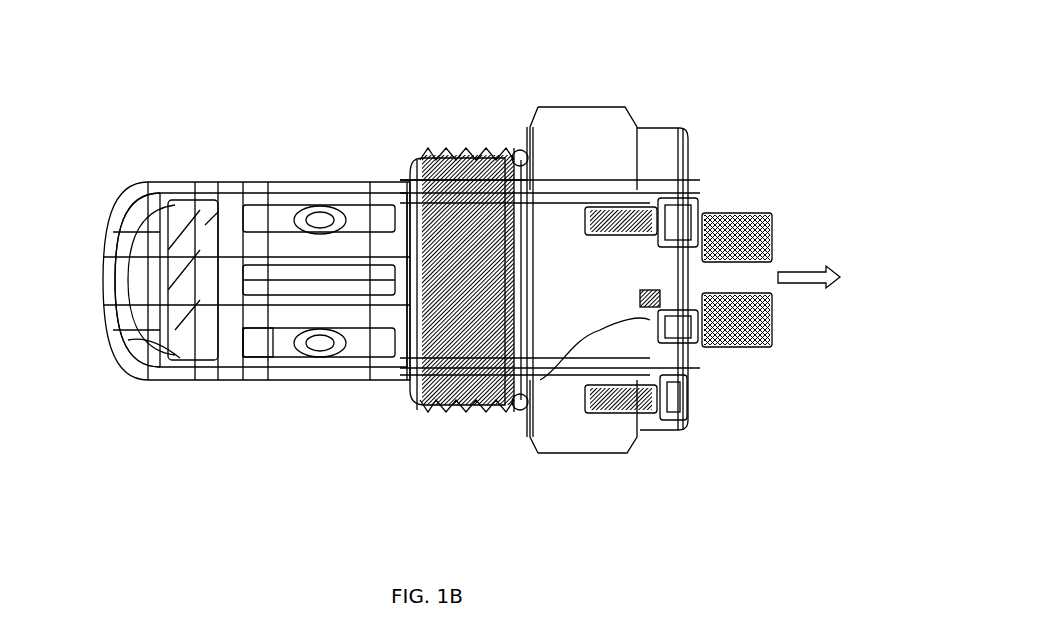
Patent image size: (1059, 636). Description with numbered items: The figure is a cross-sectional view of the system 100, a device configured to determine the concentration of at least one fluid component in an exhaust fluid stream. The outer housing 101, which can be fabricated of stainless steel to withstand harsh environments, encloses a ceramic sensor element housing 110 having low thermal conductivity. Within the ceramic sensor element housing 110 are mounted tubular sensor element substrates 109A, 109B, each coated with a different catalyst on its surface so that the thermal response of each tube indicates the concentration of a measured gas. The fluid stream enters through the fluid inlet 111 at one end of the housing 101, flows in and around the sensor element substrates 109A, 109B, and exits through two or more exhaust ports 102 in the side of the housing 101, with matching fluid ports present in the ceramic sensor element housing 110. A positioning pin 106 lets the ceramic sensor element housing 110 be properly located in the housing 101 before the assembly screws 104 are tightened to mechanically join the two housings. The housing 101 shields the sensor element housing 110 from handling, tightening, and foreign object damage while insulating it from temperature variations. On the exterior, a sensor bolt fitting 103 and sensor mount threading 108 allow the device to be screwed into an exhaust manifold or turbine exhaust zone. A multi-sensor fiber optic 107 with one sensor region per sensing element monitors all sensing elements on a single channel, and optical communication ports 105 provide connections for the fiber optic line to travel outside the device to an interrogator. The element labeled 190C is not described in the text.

The system 100 is at (636, 78).
The housing 101 is at (136, 190).
The exhaust ports 102 is at (302, 196).
The sensor bolt fitting 103 is at (520, 130).
The assembly screws 104 is at (688, 150).
The optical communication ports 105 is at (745, 265).
The positioning pin 106 is at (700, 378).
The multi-sensor fiber optic 107 is at (562, 257).
The sensor mount threading 108 is at (410, 392).
The sensor element substrate 109A is at (256, 350).
The sensor element substrate 109B is at (250, 284).
The ceramic sensor element housing 110 is at (130, 338).
The fluid inlet 111 is at (97, 280).
The circuit board 190C is at (247, 223).